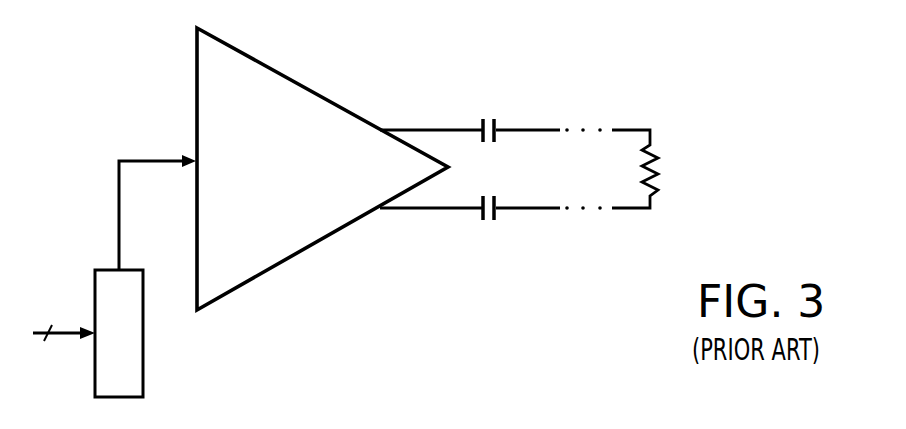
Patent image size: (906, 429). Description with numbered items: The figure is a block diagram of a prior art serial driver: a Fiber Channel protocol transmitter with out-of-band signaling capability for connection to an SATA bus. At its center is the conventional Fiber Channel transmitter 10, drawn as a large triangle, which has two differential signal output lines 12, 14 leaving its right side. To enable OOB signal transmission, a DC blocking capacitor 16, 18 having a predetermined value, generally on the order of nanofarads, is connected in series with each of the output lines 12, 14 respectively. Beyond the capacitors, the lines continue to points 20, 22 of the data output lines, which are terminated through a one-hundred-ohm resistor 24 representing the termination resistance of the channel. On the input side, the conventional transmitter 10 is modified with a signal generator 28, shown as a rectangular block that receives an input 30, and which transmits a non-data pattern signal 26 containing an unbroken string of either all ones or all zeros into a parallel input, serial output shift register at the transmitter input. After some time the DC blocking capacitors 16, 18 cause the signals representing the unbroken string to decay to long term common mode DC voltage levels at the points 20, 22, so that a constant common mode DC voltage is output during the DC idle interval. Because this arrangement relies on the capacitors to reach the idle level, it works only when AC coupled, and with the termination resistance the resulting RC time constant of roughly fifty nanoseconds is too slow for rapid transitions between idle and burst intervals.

The conventional Fiber Channel transmitter 10 is at (282, 75).
The differential signal output line 12 is at (436, 210).
The differential signal output line 14 is at (436, 128).
The DC blocking capacitor 16 is at (494, 220).
The DC blocking capacitor 18 is at (503, 102).
The point of data output line 20 is at (541, 208).
The point of data output line 22 is at (541, 130).
The 100 ohm termination resistor 24 is at (658, 150).
The non-data pattern signal 26 is at (147, 158).
The signal generator 28 is at (143, 348).
The input signal 30 is at (37, 336).